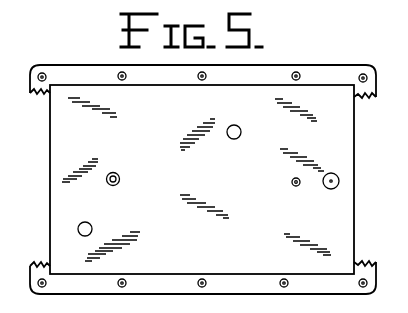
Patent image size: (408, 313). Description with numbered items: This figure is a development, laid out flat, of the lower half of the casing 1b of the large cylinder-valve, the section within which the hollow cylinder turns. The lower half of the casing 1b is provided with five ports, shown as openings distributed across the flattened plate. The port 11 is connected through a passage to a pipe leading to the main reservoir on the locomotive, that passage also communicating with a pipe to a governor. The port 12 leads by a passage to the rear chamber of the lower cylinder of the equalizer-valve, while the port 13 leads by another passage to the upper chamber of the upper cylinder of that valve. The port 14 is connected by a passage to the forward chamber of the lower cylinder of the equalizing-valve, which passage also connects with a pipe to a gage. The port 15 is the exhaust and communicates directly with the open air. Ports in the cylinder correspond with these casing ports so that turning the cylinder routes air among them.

The lower half of the casing 1b is at (203, 179).
The port 11 is at (97, 229).
The port 12 is at (127, 178).
The port 13 is at (294, 191).
The port 14 is at (333, 191).
The exhaust port 15 is at (245, 126).